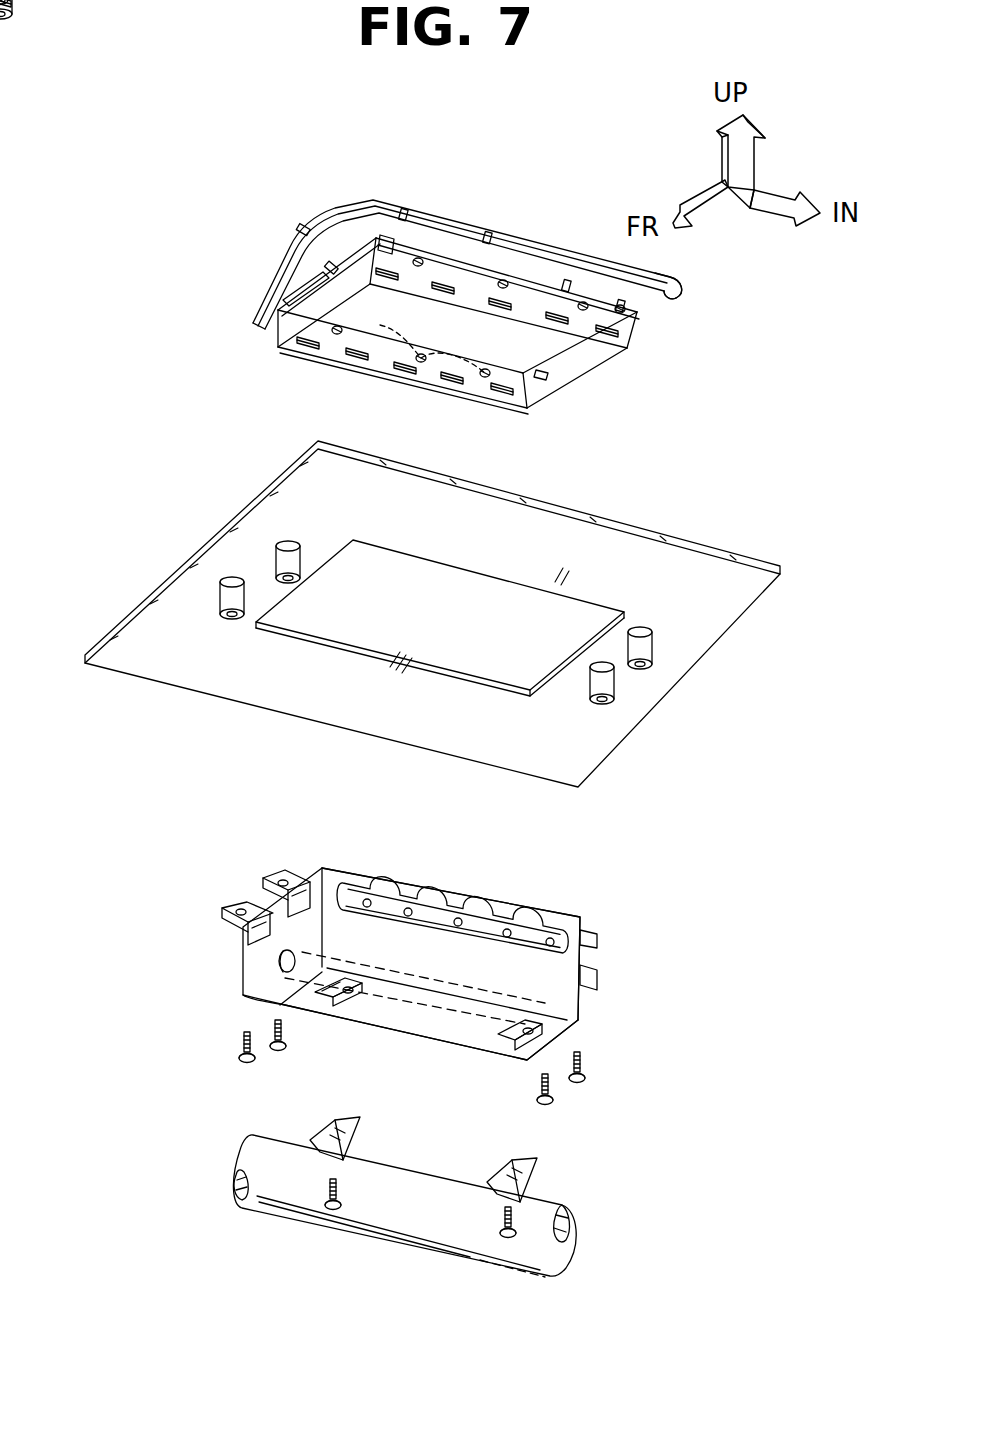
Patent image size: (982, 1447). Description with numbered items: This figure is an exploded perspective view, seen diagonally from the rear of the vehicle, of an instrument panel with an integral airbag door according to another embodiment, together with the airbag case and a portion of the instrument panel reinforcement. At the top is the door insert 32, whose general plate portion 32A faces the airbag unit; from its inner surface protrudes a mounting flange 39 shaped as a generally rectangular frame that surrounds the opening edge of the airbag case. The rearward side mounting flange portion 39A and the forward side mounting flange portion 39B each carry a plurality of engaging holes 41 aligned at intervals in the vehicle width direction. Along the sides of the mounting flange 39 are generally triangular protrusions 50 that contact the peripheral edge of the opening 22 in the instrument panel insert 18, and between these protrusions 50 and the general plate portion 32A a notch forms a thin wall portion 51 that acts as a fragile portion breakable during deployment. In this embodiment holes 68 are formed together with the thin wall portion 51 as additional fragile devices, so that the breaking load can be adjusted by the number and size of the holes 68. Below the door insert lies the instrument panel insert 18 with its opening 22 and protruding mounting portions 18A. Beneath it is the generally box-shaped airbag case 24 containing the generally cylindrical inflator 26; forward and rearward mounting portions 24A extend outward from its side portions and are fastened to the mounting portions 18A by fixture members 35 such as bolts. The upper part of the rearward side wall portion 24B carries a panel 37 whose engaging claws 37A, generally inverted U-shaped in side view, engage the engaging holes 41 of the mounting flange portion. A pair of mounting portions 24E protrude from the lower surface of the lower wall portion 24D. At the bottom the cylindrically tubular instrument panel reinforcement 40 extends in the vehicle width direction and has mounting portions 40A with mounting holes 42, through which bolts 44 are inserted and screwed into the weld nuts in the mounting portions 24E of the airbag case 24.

The instrument panel insert 18 is at (595, 730).
The mounting portions 18A is at (280, 550).
The opening 22 is at (440, 672).
The airbag case 24 is at (435, 973).
The mounting portions 24A is at (283, 880).
The rearward side wall portion 24B is at (590, 1008).
The lower wall portion 24D is at (418, 1025).
The mounting portions 24E is at (335, 1002).
The inflator 26 is at (418, 968).
The door insert 32 is at (478, 216).
The general plate portion 32A is at (676, 298).
The fixture members 35 is at (280, 1050).
The panel 37 is at (470, 945).
The engaging claws 37A is at (528, 906).
The mounting flange 39 is at (524, 357).
The rearward side mounting flange portion 39A is at (640, 325).
The forward side mounting flange portion 39B is at (485, 410).
The instrument panel reinforcement 40 is at (404, 1226).
The mounting portions 40A is at (500, 1170).
The engaging holes 41 is at (352, 400).
The mounting holes 42 is at (330, 1125).
The bolts 44 is at (500, 1220).
The protrusions 50 is at (503, 281).
The thin wall portion 51 is at (385, 238).
The holes 68 is at (331, 266).